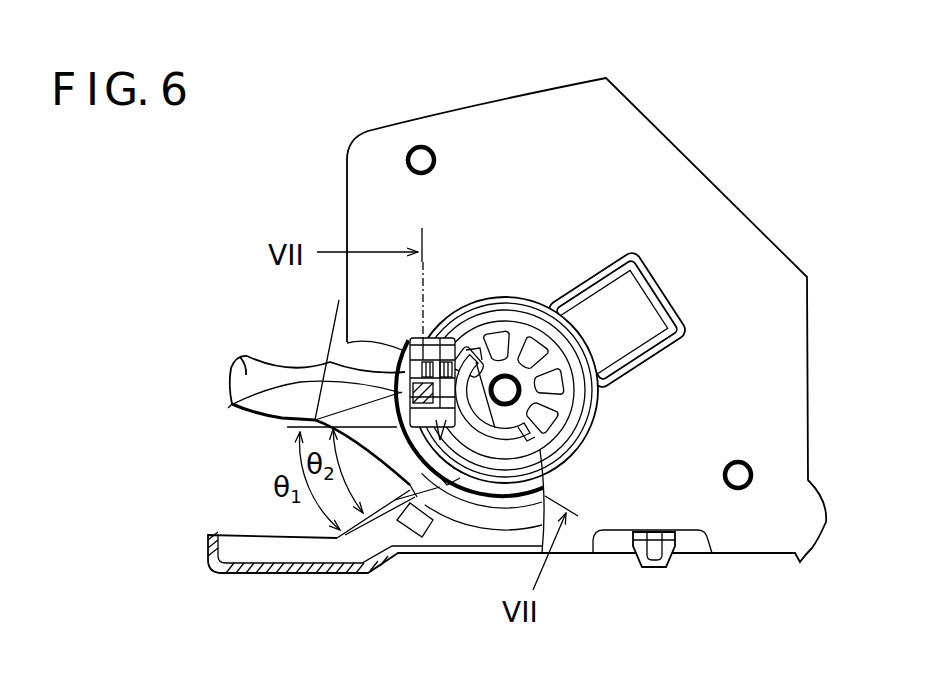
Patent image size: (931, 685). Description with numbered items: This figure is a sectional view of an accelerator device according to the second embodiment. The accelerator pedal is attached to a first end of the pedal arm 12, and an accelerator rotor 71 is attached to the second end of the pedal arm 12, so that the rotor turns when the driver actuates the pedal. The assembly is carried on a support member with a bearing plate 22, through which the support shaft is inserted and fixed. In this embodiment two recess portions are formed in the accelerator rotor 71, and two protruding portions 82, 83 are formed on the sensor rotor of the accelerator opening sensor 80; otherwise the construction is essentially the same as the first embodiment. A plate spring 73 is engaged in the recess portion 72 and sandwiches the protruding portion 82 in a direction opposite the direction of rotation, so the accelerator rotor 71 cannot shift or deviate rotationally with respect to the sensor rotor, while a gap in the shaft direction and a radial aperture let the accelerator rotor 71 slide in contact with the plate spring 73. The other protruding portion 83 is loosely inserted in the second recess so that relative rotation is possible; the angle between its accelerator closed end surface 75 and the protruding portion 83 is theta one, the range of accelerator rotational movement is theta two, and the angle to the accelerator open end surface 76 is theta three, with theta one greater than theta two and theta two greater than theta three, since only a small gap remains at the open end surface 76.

The pedal arm 12 is at (264, 352).
The bearing plate 22 is at (668, 135).
The accelerator rotor 71 is at (235, 405).
The recess portion 72 is at (330, 360).
The plate spring 73 is at (440, 337).
The accelerator closed end surface 75 is at (367, 540).
The accelerator open end surface 76 is at (446, 470).
The accelerator opening sensor 80 is at (598, 440).
The protruding portion 82 is at (320, 398).
The protruding portion 83 is at (430, 528).